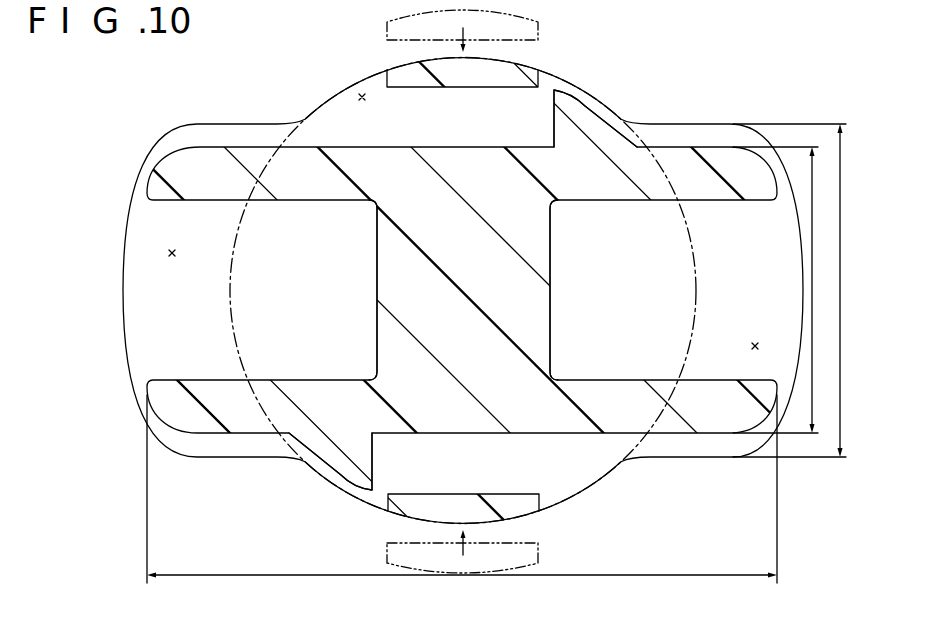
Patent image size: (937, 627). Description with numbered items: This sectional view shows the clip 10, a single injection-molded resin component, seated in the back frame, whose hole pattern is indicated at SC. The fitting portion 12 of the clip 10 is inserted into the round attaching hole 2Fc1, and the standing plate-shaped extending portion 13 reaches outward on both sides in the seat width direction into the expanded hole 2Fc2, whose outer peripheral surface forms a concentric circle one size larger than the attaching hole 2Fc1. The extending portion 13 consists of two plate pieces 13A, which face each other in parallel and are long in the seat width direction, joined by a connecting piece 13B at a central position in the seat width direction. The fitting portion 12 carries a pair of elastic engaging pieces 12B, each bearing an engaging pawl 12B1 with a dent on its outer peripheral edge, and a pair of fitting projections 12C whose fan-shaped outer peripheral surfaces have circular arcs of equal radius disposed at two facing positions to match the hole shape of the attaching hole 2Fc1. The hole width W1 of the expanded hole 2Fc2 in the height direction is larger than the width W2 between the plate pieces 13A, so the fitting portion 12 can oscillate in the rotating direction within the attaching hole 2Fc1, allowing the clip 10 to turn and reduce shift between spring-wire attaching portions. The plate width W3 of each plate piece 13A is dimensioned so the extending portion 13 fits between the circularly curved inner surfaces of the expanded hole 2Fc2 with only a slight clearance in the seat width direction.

The sealed structure SC is at (713, 38).
The clip 10 is at (358, 156).
The fitting portion 12 is at (468, 315).
The elastic engaging piece 12B is at (468, 315).
The engaging pawl 12B1 is at (517, 75).
The fitting projection 12C is at (585, 114).
The extending portion 13 is at (468, 315).
The plate piece 13A is at (676, 163).
The connecting piece 13B is at (513, 293).
The attaching hole 2Fc1 is at (361, 95).
The expanded hole 2Fc2 is at (170, 253).
The hole width W1 is at (801, 290).
The width between the plate pieces W2 is at (787, 290).
The plate width W3 is at (462, 496).